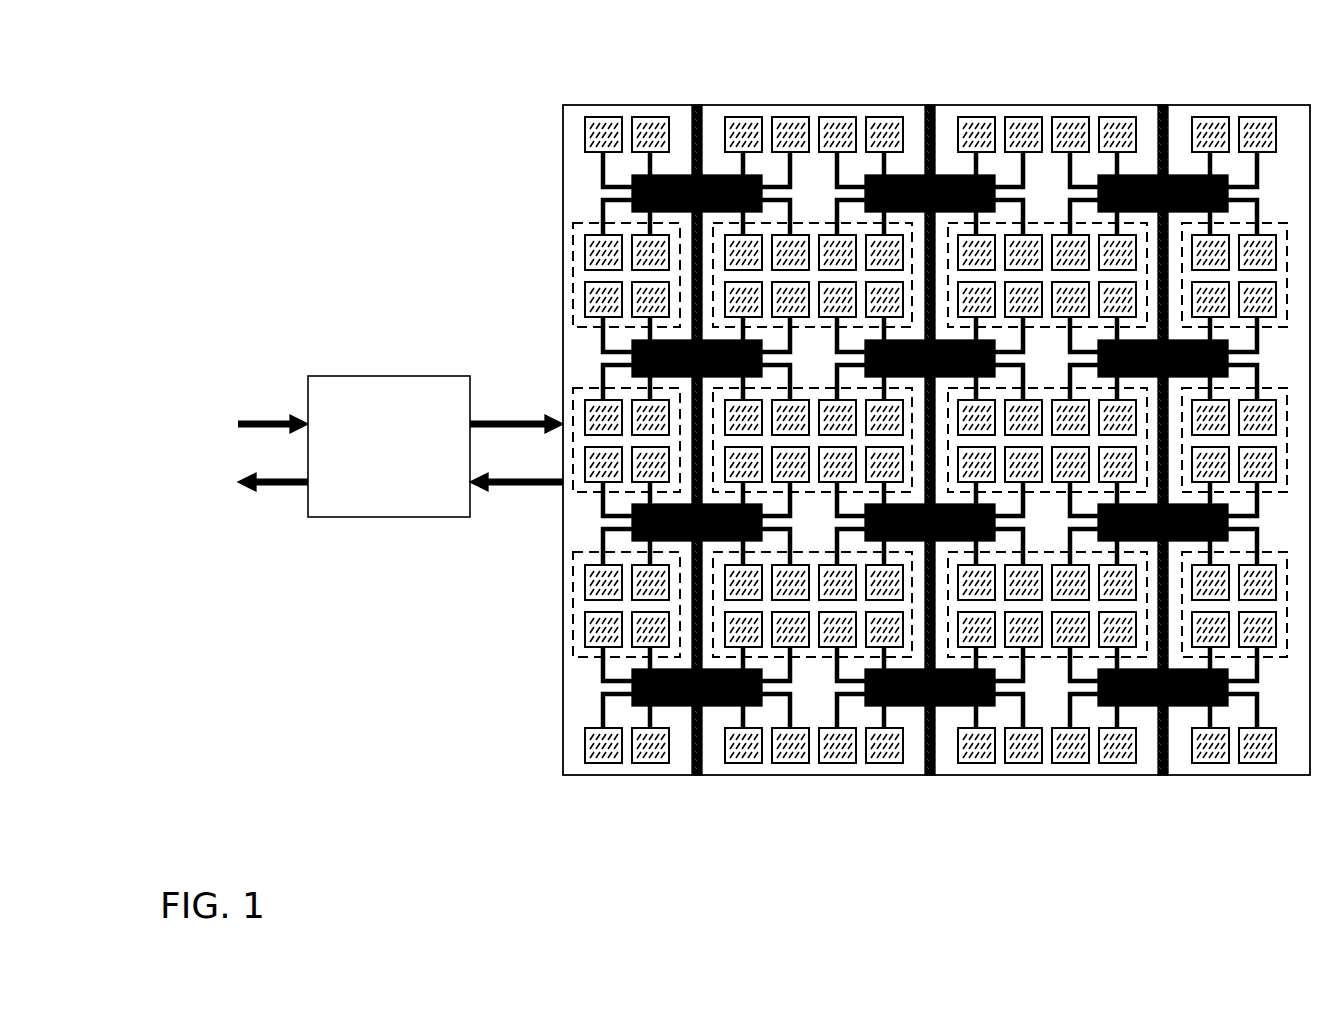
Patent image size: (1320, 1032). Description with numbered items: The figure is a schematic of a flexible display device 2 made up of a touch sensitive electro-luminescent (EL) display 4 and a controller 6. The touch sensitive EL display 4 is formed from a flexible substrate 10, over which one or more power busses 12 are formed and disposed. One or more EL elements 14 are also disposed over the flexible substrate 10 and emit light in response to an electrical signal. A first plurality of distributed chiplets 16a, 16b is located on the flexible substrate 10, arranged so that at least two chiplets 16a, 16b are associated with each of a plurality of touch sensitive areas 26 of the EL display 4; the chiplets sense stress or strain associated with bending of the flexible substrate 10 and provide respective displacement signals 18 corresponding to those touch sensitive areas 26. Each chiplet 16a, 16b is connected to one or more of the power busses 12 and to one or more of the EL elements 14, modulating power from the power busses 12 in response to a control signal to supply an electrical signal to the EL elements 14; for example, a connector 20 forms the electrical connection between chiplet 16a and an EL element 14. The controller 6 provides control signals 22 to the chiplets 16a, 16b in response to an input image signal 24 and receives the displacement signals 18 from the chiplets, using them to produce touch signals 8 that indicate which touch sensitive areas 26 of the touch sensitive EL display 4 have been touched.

The flexible display device 2 is at (370, 114).
The touch sensitive electro-luminescent (EL) display 4 is at (858, 87).
The controller 6 is at (390, 376).
The touch signals 8 is at (288, 486).
The flexible substrate 10 is at (1015, 105).
The power busses 12 is at (693, 108).
The EL elements 14 is at (597, 117).
The chiplet 16a is at (632, 193).
The chiplet 16b is at (632, 358).
The displacement signals 18 is at (530, 486).
The connector 20 is at (597, 176).
The control signals 22 is at (535, 420).
The input image signal 24 is at (252, 420).
The touch sensitive areas 26 is at (573, 277).